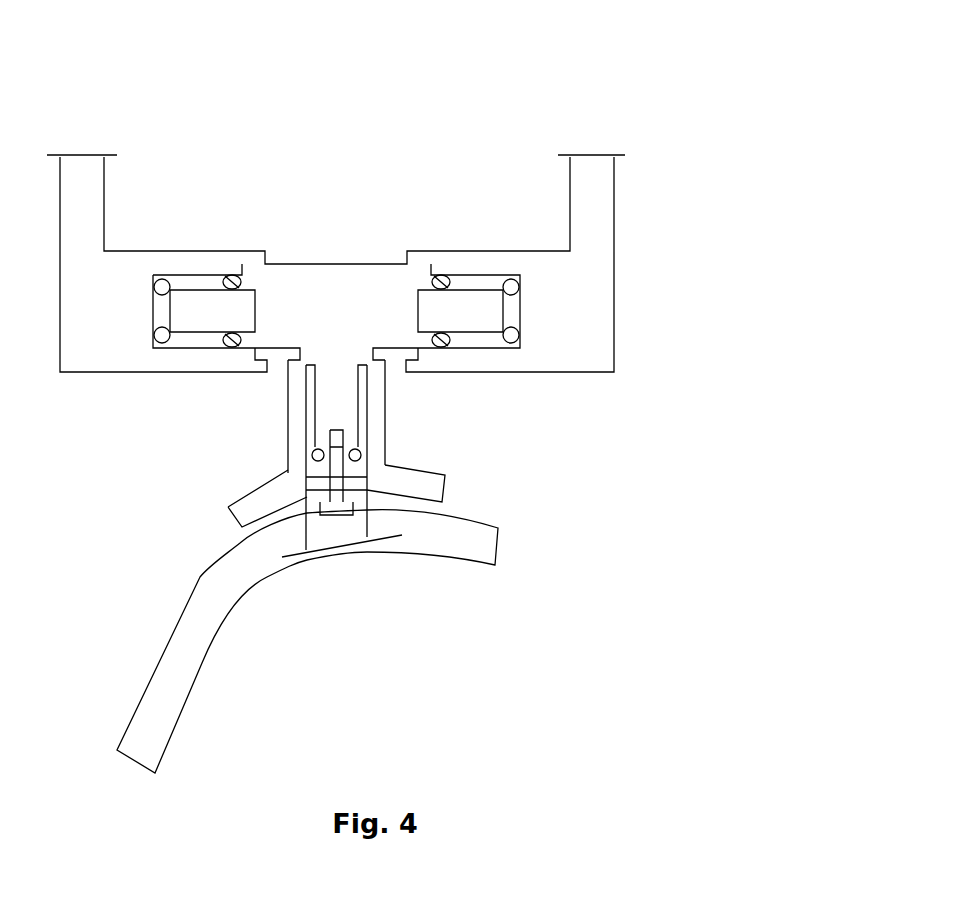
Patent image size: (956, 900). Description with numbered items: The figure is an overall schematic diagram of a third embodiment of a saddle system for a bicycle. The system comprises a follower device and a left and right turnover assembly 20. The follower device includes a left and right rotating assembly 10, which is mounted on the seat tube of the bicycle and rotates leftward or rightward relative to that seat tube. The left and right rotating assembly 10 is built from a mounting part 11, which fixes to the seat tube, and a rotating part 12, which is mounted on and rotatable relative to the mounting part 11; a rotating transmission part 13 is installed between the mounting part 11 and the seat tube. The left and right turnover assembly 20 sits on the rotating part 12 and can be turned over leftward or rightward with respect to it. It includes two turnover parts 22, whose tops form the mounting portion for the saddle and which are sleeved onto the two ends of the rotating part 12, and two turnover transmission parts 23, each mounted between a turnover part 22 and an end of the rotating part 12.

The left and right rotating assembly 10 is at (718, 348).
The mounting part 11 is at (383, 467).
The rotating part 12 is at (340, 415).
The rotating transmission part 13 is at (360, 405).
The left and right turnover assembly 20 is at (197, 62).
The turnover part 22 is at (95, 272).
The turnover transmission part 23 is at (243, 270).